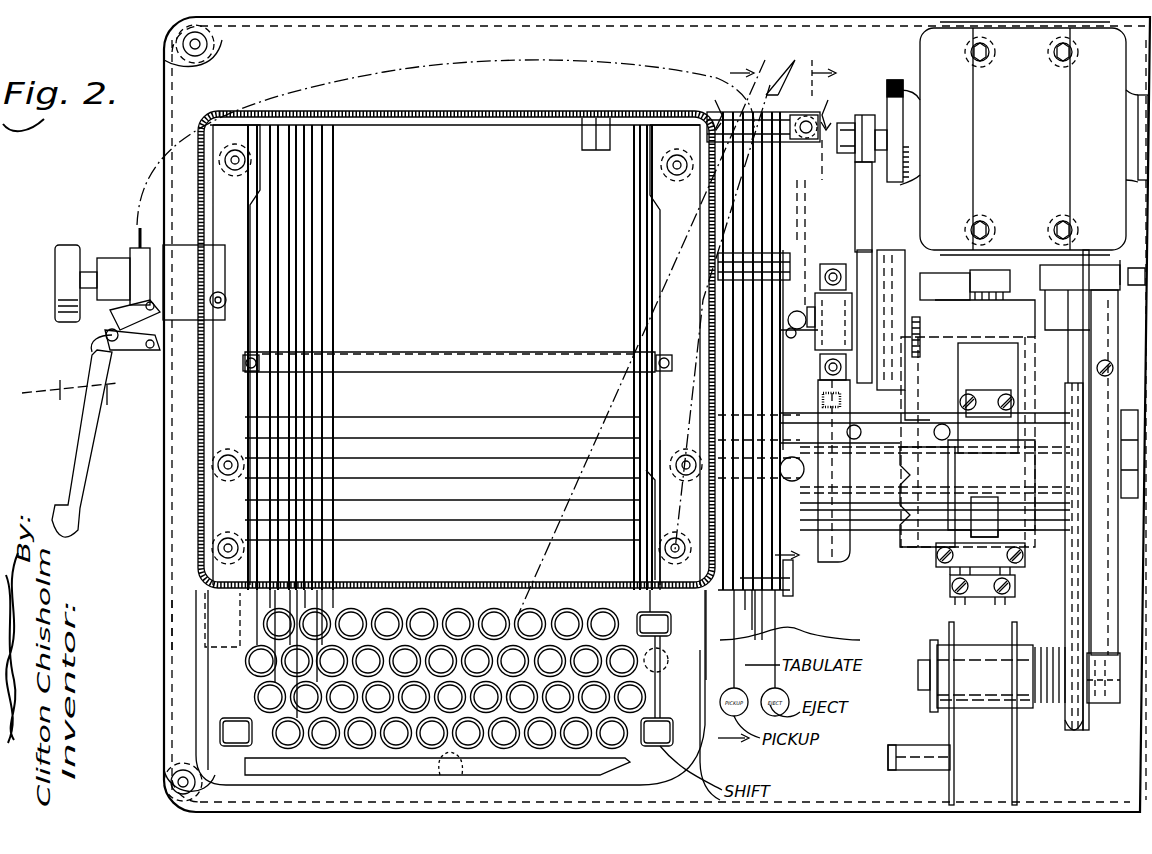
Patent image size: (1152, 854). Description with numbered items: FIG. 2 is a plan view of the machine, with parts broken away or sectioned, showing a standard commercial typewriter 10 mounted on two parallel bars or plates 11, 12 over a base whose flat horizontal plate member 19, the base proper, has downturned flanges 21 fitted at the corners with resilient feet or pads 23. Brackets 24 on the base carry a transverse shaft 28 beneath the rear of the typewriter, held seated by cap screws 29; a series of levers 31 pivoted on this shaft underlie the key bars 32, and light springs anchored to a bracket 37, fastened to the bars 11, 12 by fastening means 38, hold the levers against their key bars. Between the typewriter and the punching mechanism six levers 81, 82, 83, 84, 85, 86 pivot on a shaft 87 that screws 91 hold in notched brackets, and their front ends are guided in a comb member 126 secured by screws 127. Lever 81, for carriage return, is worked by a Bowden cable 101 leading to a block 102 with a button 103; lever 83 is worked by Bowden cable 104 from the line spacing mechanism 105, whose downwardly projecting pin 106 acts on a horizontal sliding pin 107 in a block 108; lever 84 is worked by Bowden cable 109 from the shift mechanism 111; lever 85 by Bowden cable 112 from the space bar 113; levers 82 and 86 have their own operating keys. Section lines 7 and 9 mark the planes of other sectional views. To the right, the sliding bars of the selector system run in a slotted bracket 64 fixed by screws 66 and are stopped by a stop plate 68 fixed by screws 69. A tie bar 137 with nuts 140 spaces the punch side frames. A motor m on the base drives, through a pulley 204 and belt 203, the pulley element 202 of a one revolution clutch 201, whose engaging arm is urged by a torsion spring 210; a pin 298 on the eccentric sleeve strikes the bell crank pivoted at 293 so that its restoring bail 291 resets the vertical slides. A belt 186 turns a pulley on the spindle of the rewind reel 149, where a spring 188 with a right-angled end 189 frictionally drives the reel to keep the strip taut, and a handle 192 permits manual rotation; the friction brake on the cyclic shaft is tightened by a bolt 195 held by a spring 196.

The typewriter 10 is at (195, 707).
The plate member 19 is at (178, 597).
The downturned flanges 21 is at (165, 627).
The feet or pads 23 is at (188, 45).
The cap screws 29 is at (250, 125).
The levers 31 is at (330, 238).
The transverse shaft 28 is at (398, 127).
The brackets 24 is at (604, 152).
The bracket 37 is at (398, 372).
The fastening means 38 is at (246, 358).
The Bowden cable 112 is at (612, 404).
The Bowden cable 109 is at (705, 337).
The Bowden cable 104 is at (140, 210).
The block 108 is at (130, 250).
The sliding pin 107 is at (128, 311).
The pin 106 is at (132, 352).
The line spacing mechanism 105 is at (92, 352).
The bar or plate 11 is at (80, 391).
The key bar 32 is at (322, 601).
The space bar 113 is at (490, 776).
The shift mechanism 111 is at (676, 677).
The lever 81 is at (698, 635).
The bar or plate 12 is at (733, 409).
The section line 7- 7 is at (805, 321).
The section line 9- 9 is at (771, 107).
The block 102 is at (795, 114).
The Bowden cable 101 is at (804, 65).
The button 103 is at (794, 142).
The shaft 87 is at (766, 351).
The screws 91 is at (799, 347).
The comb member 126 is at (796, 582).
The screws 127 is at (796, 590).
The nuts 140 is at (812, 530).
The tie bar 137 is at (886, 540).
The pivot 293 is at (968, 442).
The torsion spring 210 is at (985, 290).
The pin 298 is at (1048, 290).
The restoring bail 291 is at (1092, 472).
The belt 186 is at (1070, 610).
The end 189 is at (1092, 710).
The screws 66 is at (1026, 552).
The slotted bracket 64 is at (1026, 568).
The stop plate 68 is at (1018, 584).
The screws 69 is at (1018, 596).
The motor m is at (920, 52).
The bolt or screw 195 is at (1125, 260).
The spring 196 is at (1135, 268).
The pulley 204 is at (876, 115).
The belt 203 is at (858, 225).
The pulley element 202 is at (856, 260).
The one revolution clutch 201 is at (882, 250).
The rewind reel 149 is at (1018, 778).
The spring 188 is at (1048, 705).
The handle 192 is at (903, 745).
The lever 85 is at (775, 616).
The lever 86 is at (770, 640).
The lever 84 is at (756, 606).
The lever 83 is at (756, 615).
The lever 82 is at (730, 645).